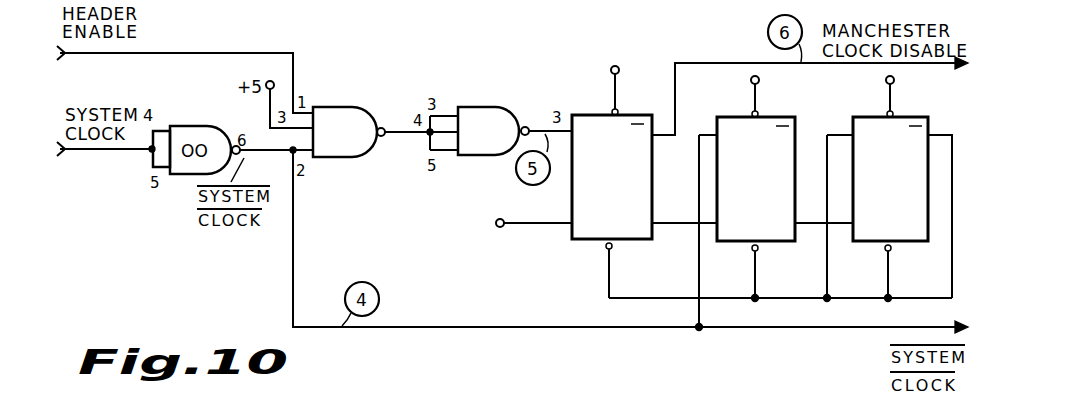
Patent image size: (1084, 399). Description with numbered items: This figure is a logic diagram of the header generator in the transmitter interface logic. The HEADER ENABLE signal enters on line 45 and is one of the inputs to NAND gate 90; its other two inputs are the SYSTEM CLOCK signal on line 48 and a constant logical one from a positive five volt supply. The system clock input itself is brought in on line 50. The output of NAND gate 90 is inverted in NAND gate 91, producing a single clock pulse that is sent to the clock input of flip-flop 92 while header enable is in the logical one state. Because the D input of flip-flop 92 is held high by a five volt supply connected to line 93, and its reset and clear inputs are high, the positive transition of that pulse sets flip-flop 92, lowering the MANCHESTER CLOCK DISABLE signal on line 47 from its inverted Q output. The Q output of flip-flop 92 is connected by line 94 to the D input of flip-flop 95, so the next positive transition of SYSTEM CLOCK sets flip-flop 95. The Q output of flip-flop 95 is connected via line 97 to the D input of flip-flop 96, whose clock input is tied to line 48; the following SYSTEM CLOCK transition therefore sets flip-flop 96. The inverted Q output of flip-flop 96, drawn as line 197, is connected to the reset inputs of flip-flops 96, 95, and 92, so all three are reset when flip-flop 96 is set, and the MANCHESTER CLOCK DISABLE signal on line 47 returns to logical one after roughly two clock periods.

The line 45 is at (241, 52).
The line 47 is at (720, 60).
The line 48 is at (283, 152).
The system clock input line 50 is at (121, 159).
The NAND gate 90 is at (355, 119).
The NAND gate 91 is at (509, 105).
The flip-flop 92 is at (657, 98).
The line 93 is at (522, 226).
The line 94 is at (672, 225).
The flip-flop 95 is at (785, 115).
The flip-flop 96 is at (921, 117).
The line 97 is at (845, 226).
The inverted Q output line of flip-flop 96 197 is at (950, 278).